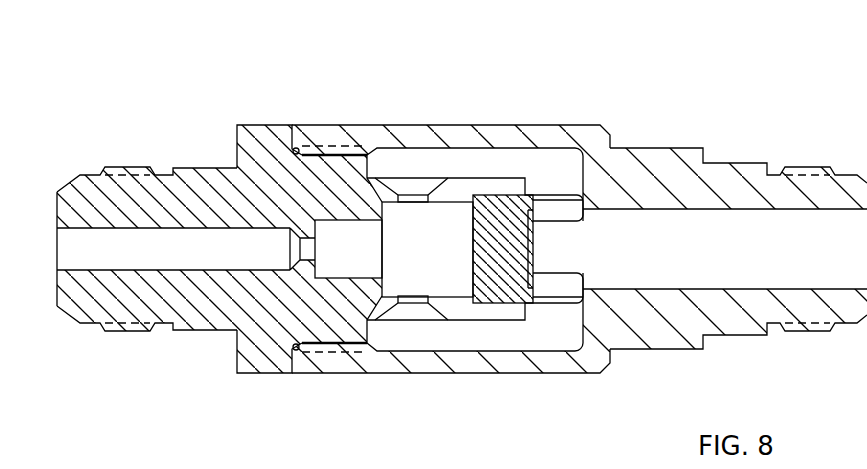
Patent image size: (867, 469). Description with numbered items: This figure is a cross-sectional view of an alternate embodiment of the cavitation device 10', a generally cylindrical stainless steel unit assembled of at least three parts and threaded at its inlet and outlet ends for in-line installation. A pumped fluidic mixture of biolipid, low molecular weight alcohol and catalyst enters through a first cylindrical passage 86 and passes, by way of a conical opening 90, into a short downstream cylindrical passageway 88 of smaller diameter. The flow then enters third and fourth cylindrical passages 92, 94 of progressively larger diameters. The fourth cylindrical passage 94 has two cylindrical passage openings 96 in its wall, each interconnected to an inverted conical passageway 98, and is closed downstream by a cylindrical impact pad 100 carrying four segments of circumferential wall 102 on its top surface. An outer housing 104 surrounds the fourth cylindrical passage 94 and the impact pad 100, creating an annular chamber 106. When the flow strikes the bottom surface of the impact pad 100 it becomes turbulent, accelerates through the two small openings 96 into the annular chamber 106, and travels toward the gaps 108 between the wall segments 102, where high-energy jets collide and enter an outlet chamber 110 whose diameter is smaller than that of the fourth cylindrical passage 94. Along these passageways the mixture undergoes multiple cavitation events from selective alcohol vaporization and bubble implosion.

The cavitation device 10' is at (395, 38).
The first cylindrical passage 86 is at (135, 260).
The downstream cylindrical passageway 88 is at (305, 250).
The conical opening 90 is at (236, 183).
The third cylindrical passage 92 is at (362, 259).
The fourth cylindrical passage 94 is at (438, 259).
The cylindrical passage openings 96 is at (420, 200).
The inverted conical passageway 98 is at (408, 178).
The impact pad 100 is at (478, 278).
The circumferential wall segments 102 is at (558, 195).
The outer housing 104 is at (533, 368).
The annular chamber 106 is at (522, 170).
The gaps 108 is at (578, 260).
The outlet chamber 110 is at (752, 259).